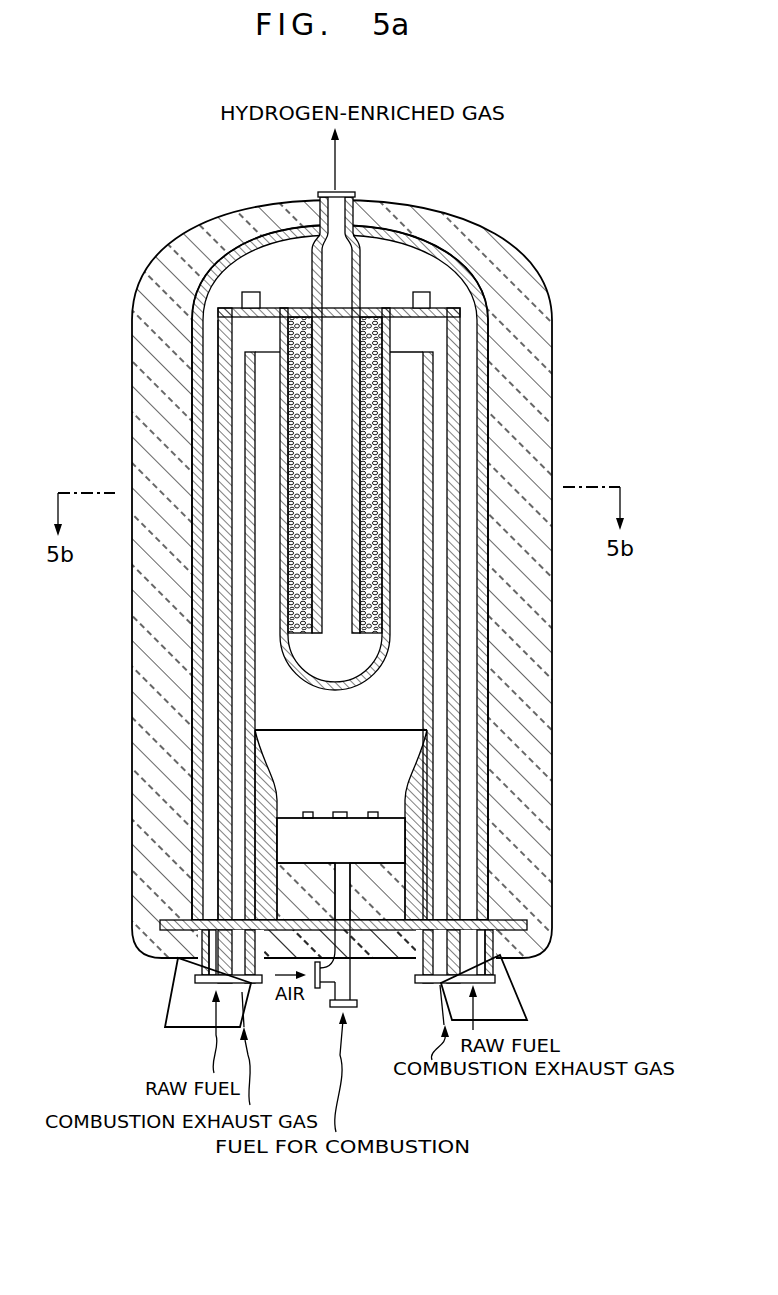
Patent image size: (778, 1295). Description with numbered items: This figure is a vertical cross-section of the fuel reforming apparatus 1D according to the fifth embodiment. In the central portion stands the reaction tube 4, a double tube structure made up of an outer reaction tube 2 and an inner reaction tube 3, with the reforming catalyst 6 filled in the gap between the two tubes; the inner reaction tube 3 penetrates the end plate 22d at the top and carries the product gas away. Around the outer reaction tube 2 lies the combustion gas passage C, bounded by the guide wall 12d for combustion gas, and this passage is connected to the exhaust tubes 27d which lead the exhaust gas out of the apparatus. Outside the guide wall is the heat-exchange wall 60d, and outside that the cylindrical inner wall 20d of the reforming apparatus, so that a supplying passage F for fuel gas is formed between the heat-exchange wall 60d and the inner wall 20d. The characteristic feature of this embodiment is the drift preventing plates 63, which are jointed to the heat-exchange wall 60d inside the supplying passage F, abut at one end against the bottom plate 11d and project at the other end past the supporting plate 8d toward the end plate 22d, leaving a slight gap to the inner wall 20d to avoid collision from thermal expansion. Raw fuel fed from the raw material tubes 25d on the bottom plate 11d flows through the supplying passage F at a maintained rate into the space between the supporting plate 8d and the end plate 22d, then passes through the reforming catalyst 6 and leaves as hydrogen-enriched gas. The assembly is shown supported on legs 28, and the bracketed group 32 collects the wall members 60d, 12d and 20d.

The fuel reforming apparatus 1D is at (337, 542).
The end plate 22d is at (417, 232).
The drift preventing plates 63 is at (425, 287).
The supporting plate 8d is at (445, 296).
The reaction tube 4 is at (343, 441).
The inner reaction tube 3 is at (354, 253).
The outer reaction tube 2 is at (382, 240).
The reforming catalyst 6 is at (303, 325).
The combustion gas passage C is at (265, 378).
The tube assembly 32 is at (305, 633).
The heat-exchange wall 60d is at (225, 632).
The guide wall for combustion gas 12d is at (250, 660).
The inner wall of the reforming apparatus 20d is at (200, 697).
The supplying passage for fuel gas F is at (215, 748).
The bottom plate 11d is at (180, 928).
The raw material tubes 25d is at (212, 965).
The exhaust tubes 27d is at (225, 985).
The support leg 28 is at (190, 1022).